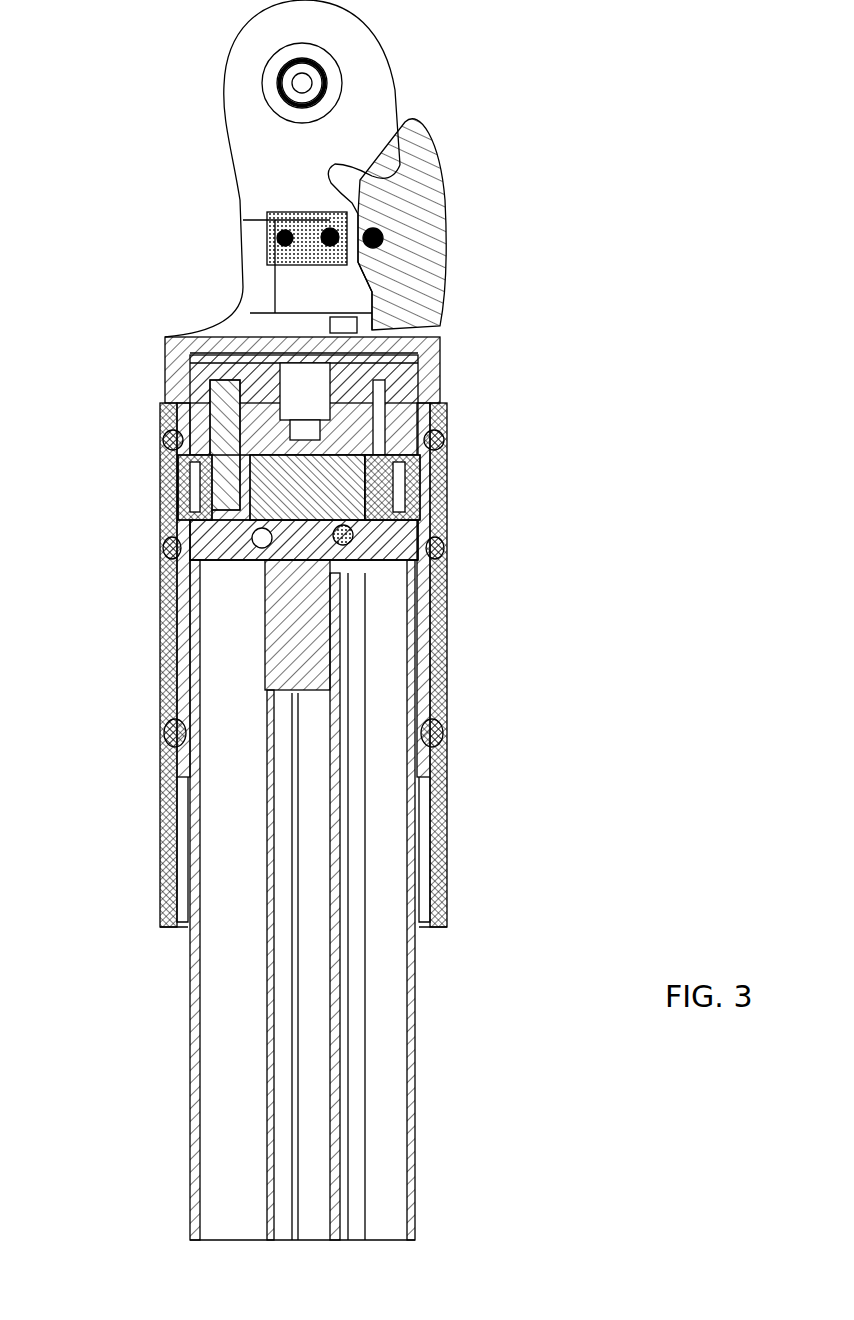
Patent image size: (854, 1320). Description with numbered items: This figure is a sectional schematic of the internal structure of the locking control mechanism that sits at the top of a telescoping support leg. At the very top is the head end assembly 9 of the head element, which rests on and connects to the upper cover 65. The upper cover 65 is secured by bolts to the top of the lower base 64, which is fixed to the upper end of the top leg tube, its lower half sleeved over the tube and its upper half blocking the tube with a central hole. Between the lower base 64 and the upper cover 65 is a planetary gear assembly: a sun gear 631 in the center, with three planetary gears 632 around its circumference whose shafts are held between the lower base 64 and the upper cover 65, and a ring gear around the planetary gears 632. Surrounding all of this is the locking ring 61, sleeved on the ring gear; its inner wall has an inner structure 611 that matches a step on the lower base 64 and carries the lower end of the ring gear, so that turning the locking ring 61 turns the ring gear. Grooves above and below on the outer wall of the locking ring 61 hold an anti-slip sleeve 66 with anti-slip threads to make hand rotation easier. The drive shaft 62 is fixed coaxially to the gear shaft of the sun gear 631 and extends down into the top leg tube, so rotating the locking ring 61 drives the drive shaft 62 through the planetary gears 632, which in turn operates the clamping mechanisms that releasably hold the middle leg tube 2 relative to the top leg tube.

The head end assembly 9 is at (215, 318).
The upper cover 65 is at (442, 381).
The sun gear 631 is at (268, 488).
The planetary gears 632 is at (185, 492).
The anti-slip sleeve 66 is at (168, 550).
The inner structure 611 is at (450, 515).
The lower base 64 is at (395, 548).
The locking ring 61 is at (160, 662).
The drive shaft 62 is at (322, 853).
The middle leg tube 2 is at (412, 1020).